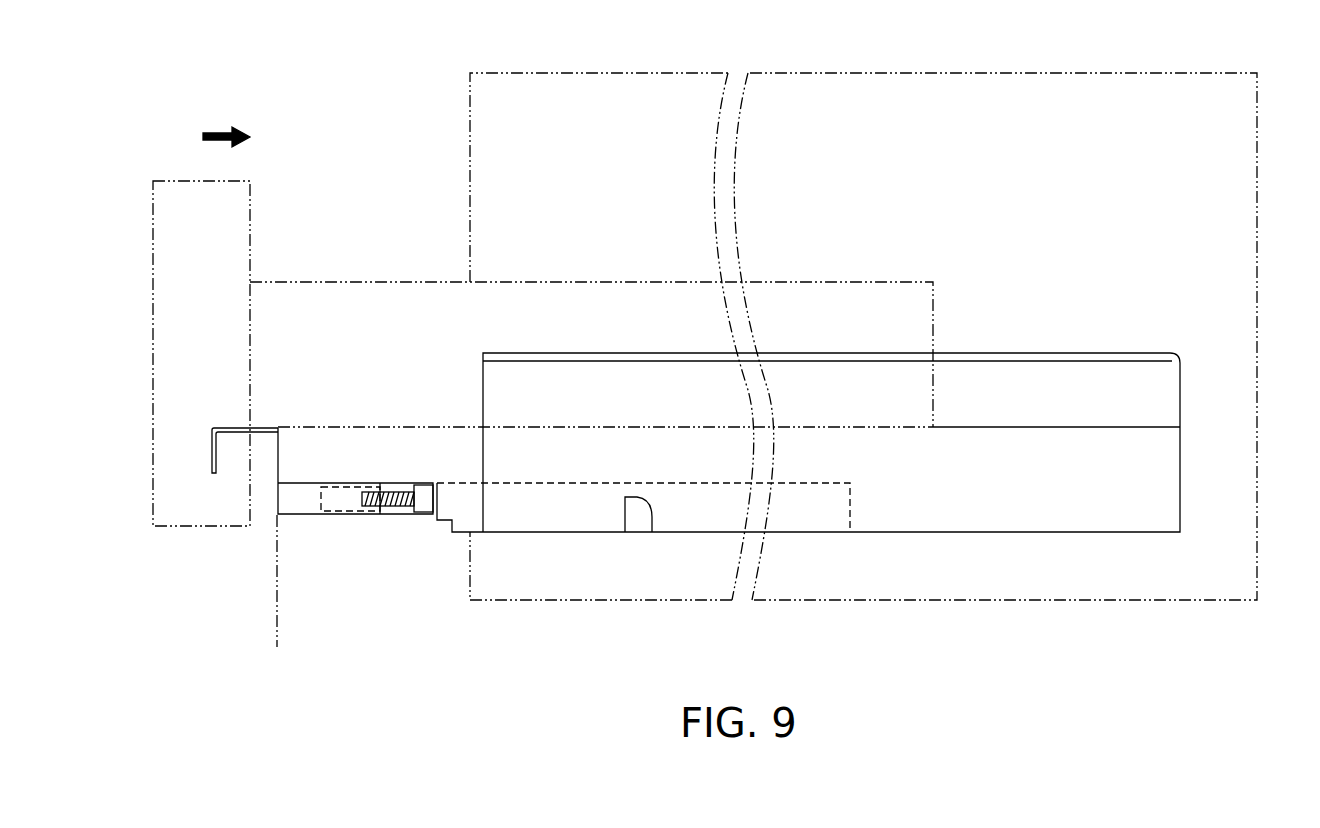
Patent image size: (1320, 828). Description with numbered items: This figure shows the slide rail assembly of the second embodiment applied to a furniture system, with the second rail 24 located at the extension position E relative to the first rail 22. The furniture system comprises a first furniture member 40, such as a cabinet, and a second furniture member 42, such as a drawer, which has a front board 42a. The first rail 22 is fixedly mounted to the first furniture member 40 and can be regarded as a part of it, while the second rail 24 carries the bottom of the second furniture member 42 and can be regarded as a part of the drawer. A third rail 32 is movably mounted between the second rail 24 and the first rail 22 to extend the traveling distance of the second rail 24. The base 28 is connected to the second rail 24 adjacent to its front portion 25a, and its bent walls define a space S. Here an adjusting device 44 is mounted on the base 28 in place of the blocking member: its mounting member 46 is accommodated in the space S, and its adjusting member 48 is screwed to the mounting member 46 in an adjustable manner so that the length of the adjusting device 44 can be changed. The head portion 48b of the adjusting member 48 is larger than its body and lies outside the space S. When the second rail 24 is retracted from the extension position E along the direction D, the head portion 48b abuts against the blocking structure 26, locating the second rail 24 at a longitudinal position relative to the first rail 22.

The first rail 22 is at (1173, 351).
The second rail 24 is at (449, 426).
The front portion 25a is at (280, 473).
The blocking structure 26 is at (645, 519).
The base 28 is at (321, 519).
The third rail 32 is at (851, 519).
The first furniture member 40 is at (1194, 72).
The second furniture member 42 is at (366, 279).
The front board 42a is at (176, 190).
The adjusting device 44 is at (367, 573).
The mounting member 46 is at (347, 514).
The adjusting member 48 is at (405, 511).
The head portion 48b is at (424, 500).
The space S is at (313, 494).
The direction D is at (217, 136).
The extension position E is at (276, 590).